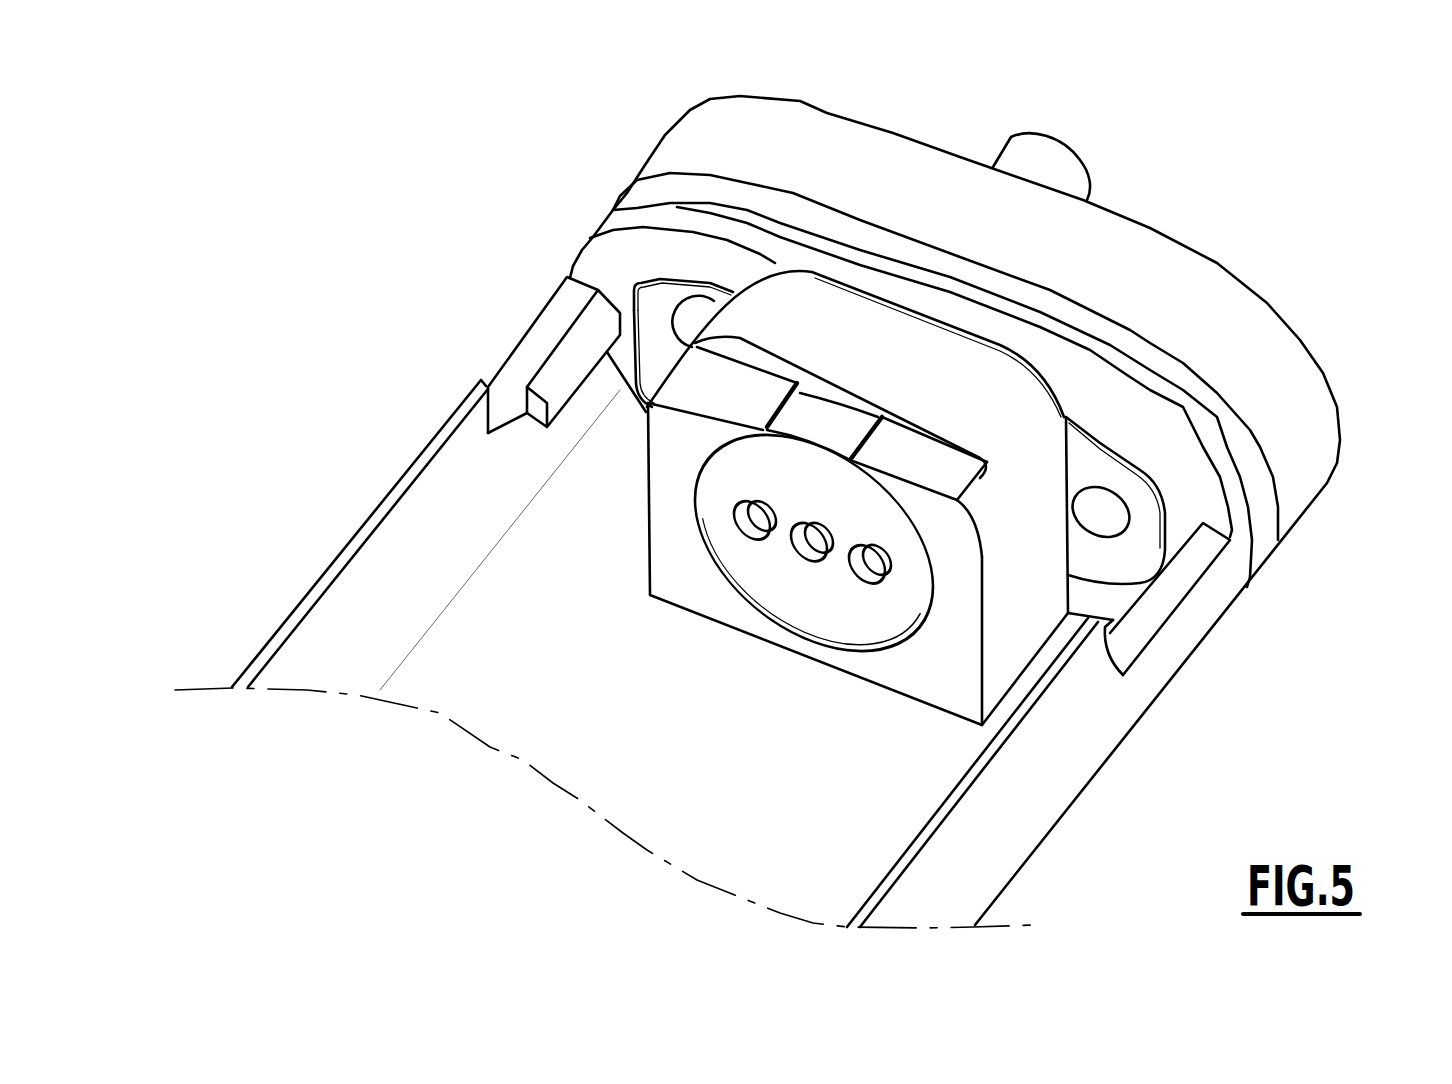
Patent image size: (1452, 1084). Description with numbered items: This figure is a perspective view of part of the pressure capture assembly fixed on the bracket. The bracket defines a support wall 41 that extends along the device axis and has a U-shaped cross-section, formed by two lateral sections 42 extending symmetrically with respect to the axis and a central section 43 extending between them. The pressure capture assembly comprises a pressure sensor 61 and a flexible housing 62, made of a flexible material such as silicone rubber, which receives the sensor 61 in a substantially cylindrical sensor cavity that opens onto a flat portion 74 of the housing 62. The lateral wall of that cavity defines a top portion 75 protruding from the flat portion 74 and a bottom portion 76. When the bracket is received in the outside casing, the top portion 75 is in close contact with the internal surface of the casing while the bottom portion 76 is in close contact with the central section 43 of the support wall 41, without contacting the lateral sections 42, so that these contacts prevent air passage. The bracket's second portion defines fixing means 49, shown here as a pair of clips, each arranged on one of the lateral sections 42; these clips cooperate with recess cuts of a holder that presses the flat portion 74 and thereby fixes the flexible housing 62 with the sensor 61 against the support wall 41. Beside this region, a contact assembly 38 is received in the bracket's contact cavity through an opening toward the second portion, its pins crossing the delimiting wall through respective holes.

The contact assembly 38 is at (932, 510).
The support wall 41 is at (273, 610).
The lateral sections 42 is at (320, 647).
The central section 43 is at (683, 688).
The fixing means 49 is at (545, 301).
The pressure sensor 61 is at (840, 600).
The flexible housing 62 is at (837, 401).
The flat portion 74 is at (693, 383).
The top portion 75 is at (808, 313).
The bottom portion 76 is at (837, 401).